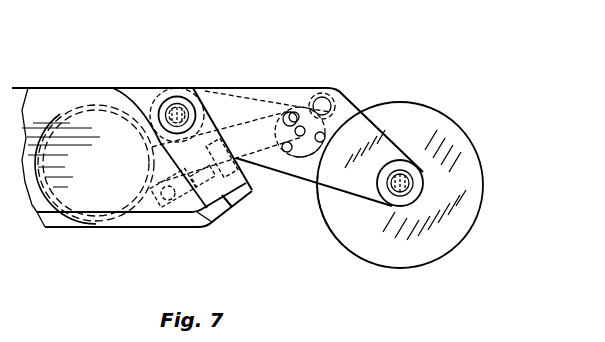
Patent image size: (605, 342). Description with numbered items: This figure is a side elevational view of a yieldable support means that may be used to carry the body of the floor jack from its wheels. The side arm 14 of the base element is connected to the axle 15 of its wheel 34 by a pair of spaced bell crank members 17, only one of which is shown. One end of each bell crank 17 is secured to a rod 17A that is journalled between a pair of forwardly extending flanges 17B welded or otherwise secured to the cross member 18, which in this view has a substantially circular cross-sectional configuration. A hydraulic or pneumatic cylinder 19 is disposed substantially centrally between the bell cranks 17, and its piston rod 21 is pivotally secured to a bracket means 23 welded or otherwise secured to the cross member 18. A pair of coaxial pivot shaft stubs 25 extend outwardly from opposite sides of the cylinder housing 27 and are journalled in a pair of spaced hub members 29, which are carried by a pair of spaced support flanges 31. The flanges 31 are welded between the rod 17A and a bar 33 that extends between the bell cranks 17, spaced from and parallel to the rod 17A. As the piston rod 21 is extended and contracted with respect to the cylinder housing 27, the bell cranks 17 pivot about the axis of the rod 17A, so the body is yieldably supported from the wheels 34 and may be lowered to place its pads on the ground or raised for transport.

The side arm 14 is at (60, 225).
The axle 15 is at (412, 166).
The bell crank member 17 is at (300, 90).
The rod 17A is at (177, 108).
The forwardly extending flange 17B is at (135, 95).
The cross member 18 is at (62, 115).
The hydraulic or pneumatic cylinder 19 is at (258, 136).
The piston rod 21 is at (202, 205).
The bracket means 23 is at (160, 190).
The pivot shaft stub 25 is at (308, 94).
The cylinder housing 27 is at (261, 180).
The hub member 29 is at (399, 169).
The support flange 31 is at (218, 103).
The bar 33 is at (325, 110).
The wheel 34 is at (335, 217).